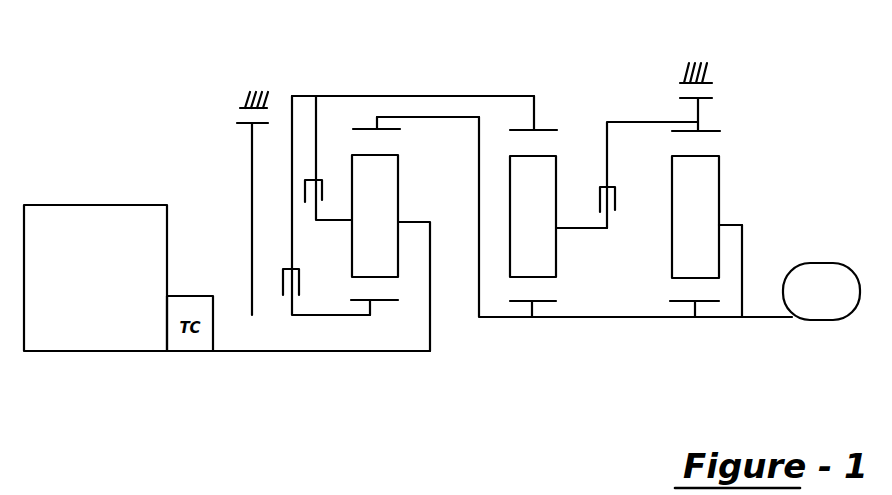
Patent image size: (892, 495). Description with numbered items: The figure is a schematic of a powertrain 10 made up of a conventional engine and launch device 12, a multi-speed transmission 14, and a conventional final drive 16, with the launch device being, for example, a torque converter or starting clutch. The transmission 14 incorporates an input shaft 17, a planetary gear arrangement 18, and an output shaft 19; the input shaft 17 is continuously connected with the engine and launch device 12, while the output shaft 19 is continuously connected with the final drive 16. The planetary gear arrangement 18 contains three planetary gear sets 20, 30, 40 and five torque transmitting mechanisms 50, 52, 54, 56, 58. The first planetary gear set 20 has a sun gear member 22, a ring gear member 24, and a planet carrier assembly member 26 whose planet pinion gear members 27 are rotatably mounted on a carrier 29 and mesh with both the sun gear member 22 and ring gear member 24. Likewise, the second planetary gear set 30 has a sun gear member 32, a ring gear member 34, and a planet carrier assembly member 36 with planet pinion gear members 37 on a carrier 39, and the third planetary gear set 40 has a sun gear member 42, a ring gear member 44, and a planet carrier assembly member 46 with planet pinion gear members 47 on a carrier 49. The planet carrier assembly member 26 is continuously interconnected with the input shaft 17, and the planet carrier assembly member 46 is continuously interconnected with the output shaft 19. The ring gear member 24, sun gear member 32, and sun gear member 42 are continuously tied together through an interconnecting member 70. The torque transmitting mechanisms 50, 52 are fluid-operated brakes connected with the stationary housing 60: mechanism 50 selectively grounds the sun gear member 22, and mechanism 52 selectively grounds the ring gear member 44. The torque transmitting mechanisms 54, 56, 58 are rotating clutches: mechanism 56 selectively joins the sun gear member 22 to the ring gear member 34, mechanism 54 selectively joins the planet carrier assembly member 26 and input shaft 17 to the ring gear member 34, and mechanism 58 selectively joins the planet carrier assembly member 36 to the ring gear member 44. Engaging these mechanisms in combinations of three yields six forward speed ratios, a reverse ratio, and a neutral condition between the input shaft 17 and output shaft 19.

The powertrain 10 is at (131, 160).
The engine and launch device 12 is at (93, 206).
The multi-speed transmission 14 is at (530, 74).
The final drive 16 is at (812, 263).
The input shaft 17 is at (264, 352).
The planetary gear arrangement 18 is at (480, 357).
The output shaft 19 is at (752, 318).
The planetary gear set 20 is at (376, 335).
The sun gear member 22 is at (393, 303).
The ring gear member 24 is at (363, 127).
The planet carrier assembly member 26 is at (420, 197).
The planet pinion gear members 27 is at (400, 204).
The carrier 29 is at (335, 225).
The planetary gear set 30 is at (566, 277).
The sun gear member 32 is at (517, 303).
The ring gear member 34 is at (540, 128).
The planet carrier assembly member 36 is at (562, 163).
The planet pinion gear members 37 is at (558, 196).
The carrier 39 is at (580, 231).
The planetary gear set 40 is at (728, 303).
The sun gear member 42 is at (680, 303).
The ring gear member 44 is at (706, 130).
The planet carrier assembly member 46 is at (727, 182).
The planet pinion gear members 47 is at (708, 213).
The carrier 49 is at (723, 225).
The torque transmitting mechanism 50 is at (280, 112).
The torque transmitting mechanism 52 is at (720, 88).
The torque transmitting mechanism 54 is at (327, 149).
The torque transmitting mechanism 56 is at (298, 303).
The torque transmitting mechanism 58 is at (613, 206).
The housing 60 is at (246, 97).
The interconnecting member 70 is at (460, 116).